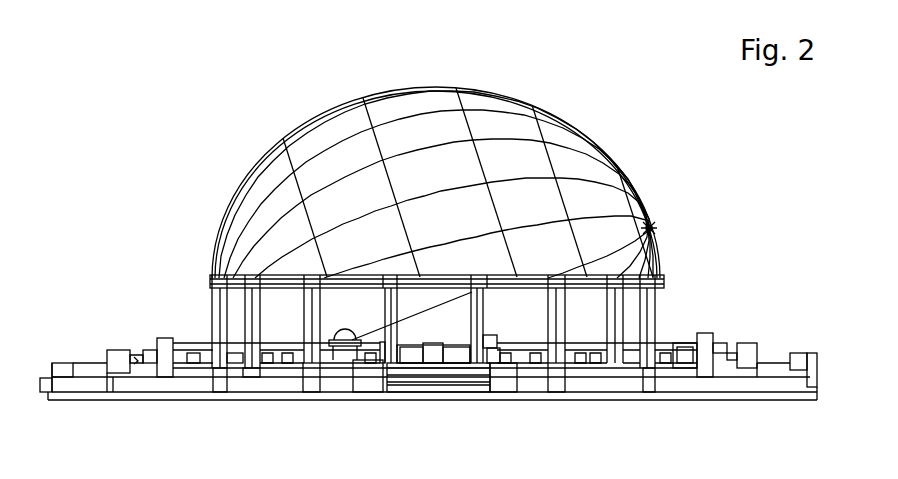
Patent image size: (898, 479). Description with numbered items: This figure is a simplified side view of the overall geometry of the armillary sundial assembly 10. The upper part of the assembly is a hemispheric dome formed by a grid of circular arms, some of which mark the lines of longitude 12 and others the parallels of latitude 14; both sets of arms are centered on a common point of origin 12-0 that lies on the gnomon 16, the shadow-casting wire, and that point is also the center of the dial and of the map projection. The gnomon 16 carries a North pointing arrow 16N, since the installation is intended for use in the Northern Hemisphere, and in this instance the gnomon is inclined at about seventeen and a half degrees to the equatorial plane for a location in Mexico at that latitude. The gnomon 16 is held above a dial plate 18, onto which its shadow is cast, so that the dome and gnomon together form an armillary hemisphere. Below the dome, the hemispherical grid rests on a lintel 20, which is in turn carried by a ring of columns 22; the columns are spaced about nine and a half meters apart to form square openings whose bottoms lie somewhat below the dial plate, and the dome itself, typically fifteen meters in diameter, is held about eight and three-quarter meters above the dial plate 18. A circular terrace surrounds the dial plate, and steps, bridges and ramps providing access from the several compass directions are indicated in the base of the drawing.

The sundial assembly 10 is at (290, 122).
The lines of longitude 12 is at (530, 137).
The parallels of latitude 14 is at (500, 203).
The gnomon 16 is at (363, 331).
The North pointing arrow 16N is at (663, 222).
The dial plate 18 is at (430, 389).
The lintel 20 is at (668, 268).
The columns 22 is at (238, 332).
The common point of origin 12-0 is at (432, 310).